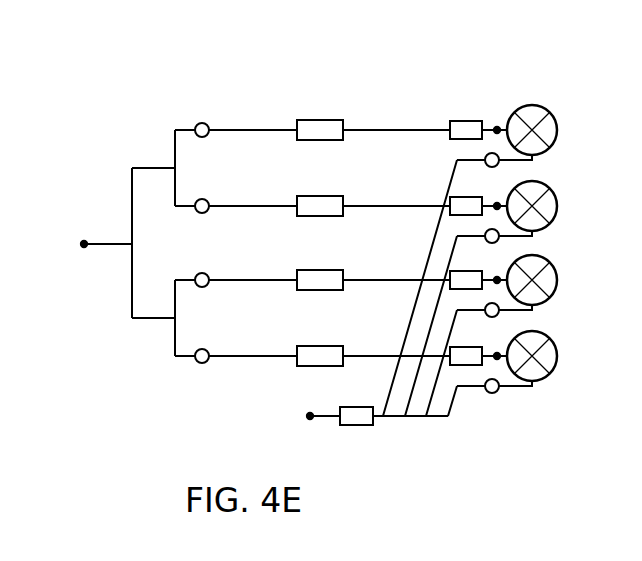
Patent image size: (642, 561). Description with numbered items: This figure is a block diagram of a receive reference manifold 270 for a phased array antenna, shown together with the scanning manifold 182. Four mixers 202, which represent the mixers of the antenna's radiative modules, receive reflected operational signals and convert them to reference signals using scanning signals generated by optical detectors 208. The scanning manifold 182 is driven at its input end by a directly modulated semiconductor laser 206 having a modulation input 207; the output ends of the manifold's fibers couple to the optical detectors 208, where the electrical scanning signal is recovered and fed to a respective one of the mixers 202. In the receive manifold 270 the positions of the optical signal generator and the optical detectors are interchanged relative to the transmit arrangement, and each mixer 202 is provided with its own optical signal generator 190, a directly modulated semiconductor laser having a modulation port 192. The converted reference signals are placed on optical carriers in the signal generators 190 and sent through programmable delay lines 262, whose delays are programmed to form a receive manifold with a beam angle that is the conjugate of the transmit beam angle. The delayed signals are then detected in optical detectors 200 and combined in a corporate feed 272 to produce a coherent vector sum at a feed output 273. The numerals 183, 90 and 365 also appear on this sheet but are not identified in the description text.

The receive reference manifold 270 is at (382, 100).
The corporate feed 272 is at (115, 203).
The feed output 273 is at (84, 244).
The optical detectors 200 is at (202, 123).
The programmable delay lines 262 is at (330, 120).
The optical signal generator 190 is at (470, 121).
The modulation port 192 is at (497, 126).
The mixers 202 is at (555, 143).
The conductors 183 is at (277, 208).
The optical detectors 208 is at (494, 393).
The modulation input 207 is at (310, 416).
The directly modulated semiconductor laser 206 is at (353, 425).
The scanning manifold 182 is at (398, 423).
The lighting system 90 is at (0, 362).
The circuit board 365 is at (12, 560).